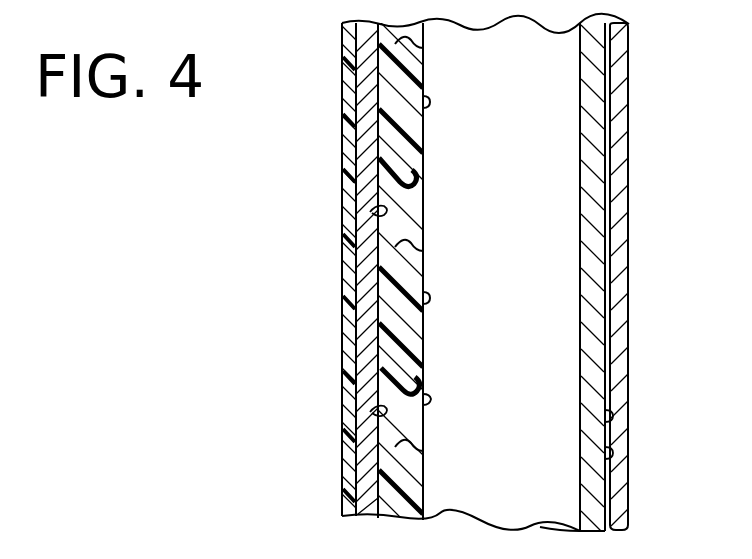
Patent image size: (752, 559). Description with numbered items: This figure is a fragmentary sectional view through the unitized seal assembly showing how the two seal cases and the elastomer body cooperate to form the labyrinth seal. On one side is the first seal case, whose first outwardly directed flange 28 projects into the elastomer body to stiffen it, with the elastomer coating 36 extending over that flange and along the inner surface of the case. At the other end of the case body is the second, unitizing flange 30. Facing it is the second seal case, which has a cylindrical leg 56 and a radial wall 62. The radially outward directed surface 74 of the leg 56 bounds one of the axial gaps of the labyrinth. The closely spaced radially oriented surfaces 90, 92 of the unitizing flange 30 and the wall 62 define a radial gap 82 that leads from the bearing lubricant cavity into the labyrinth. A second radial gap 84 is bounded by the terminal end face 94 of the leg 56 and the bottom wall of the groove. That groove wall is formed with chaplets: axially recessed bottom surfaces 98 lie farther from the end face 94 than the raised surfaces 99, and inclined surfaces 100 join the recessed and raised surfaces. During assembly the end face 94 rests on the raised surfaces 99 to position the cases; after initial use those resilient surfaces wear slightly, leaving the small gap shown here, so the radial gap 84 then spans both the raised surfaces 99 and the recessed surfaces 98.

The first outwardly directed flange 28 is at (360, 513).
The second outwardly directed flange 30 is at (620, 230).
The elastomer coating 36 is at (345, 438).
The cylindrical leg 56 is at (558, 524).
The radial wall 62 is at (593, 317).
The radially outward directed surface 74 is at (517, 252).
The radial gap 82 is at (603, 366).
The radial gap 84 is at (420, 278).
The radially oriented surface 90 is at (607, 457).
The radially oriented surface 92 is at (603, 425).
The terminal end face 94 is at (425, 400).
The recessed bottom surfaces 98 is at (372, 212).
The raised surfaces 99 is at (386, 114).
The inclined surfaces 100 is at (352, 62).